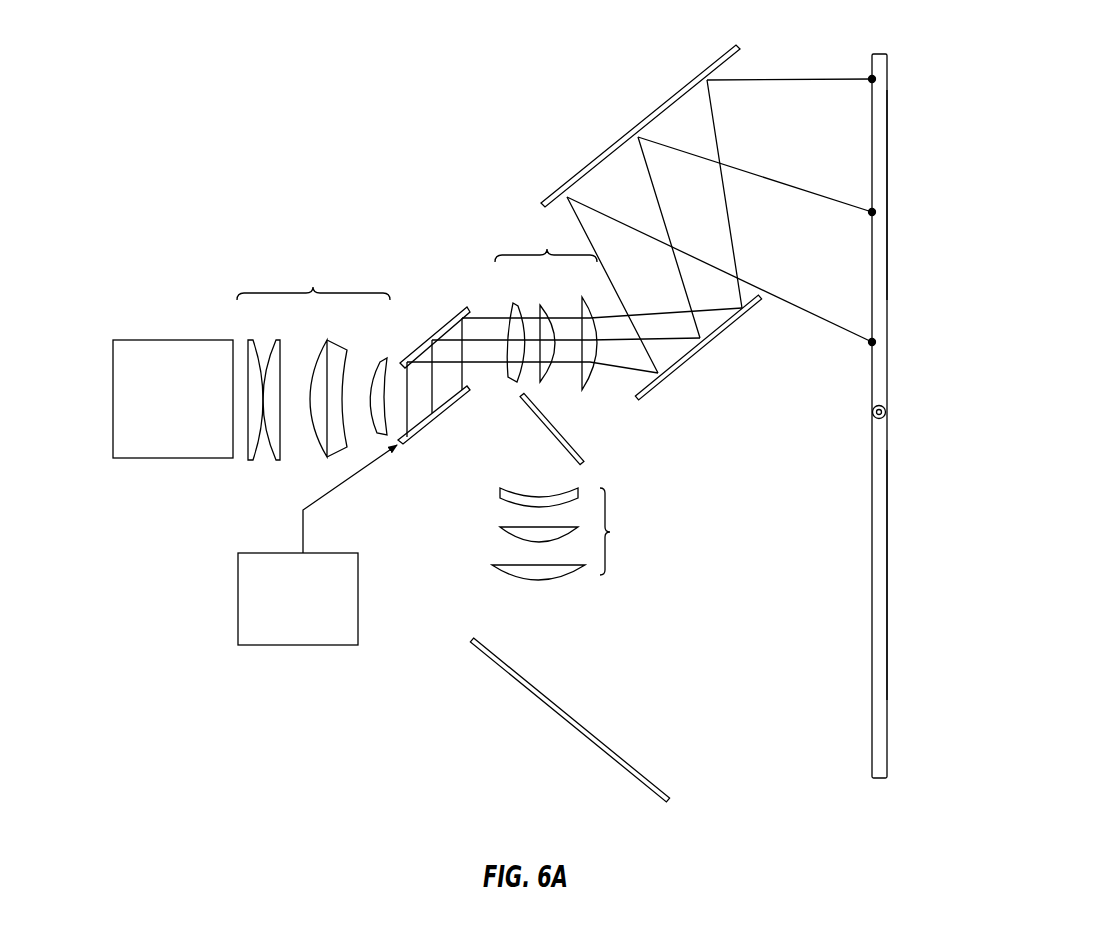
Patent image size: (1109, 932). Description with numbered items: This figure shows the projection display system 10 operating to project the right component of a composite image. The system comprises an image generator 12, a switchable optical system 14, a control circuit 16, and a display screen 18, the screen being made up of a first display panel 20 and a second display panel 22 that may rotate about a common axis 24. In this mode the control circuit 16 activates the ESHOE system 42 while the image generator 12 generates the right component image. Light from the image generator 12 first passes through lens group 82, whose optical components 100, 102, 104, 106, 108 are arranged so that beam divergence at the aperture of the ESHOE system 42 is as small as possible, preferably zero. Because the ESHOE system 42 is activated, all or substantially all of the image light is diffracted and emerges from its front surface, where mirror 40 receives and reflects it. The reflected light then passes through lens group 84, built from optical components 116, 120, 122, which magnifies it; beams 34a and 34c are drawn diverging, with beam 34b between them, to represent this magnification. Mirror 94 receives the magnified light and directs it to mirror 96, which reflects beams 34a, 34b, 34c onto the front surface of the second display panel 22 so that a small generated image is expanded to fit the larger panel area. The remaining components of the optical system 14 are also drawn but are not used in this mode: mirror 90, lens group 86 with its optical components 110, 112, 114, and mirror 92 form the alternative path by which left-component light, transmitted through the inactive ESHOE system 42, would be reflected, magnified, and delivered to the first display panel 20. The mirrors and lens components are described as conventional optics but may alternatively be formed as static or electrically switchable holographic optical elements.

The projection display system 10 is at (260, 137).
The image generator 12 is at (160, 339).
The switchable optical system 14 is at (387, 242).
The control circuit 16 is at (255, 553).
The display screen 18 is at (875, 45).
The first display panel 20 is at (888, 552).
The second display panel 22 is at (887, 197).
The common axis 24 is at (892, 405).
The beam 34a is at (757, 77).
The beam 34b is at (767, 175).
The beam 34c is at (747, 283).
The light deflector 40 is at (442, 317).
The ESHOE system 42 is at (412, 443).
The lens group 82 is at (313, 280).
The lens group 84 is at (546, 242).
The lens group 86 is at (621, 531).
The light deflector 90 is at (562, 433).
The light deflector 92 is at (523, 687).
The light deflector 94 is at (668, 378).
The light deflector 96 is at (645, 120).
The optical component 100 is at (250, 463).
The optical component 102 is at (272, 347).
The optical component 104 is at (320, 450).
The optical component 106 is at (333, 340).
The optical component 108 is at (387, 358).
The optical component 110 is at (498, 495).
The optical component 112 is at (498, 528).
The optical component 114 is at (495, 567).
The optical component 116 is at (510, 302).
The optical component 120 is at (546, 301).
The optical component 122 is at (600, 277).